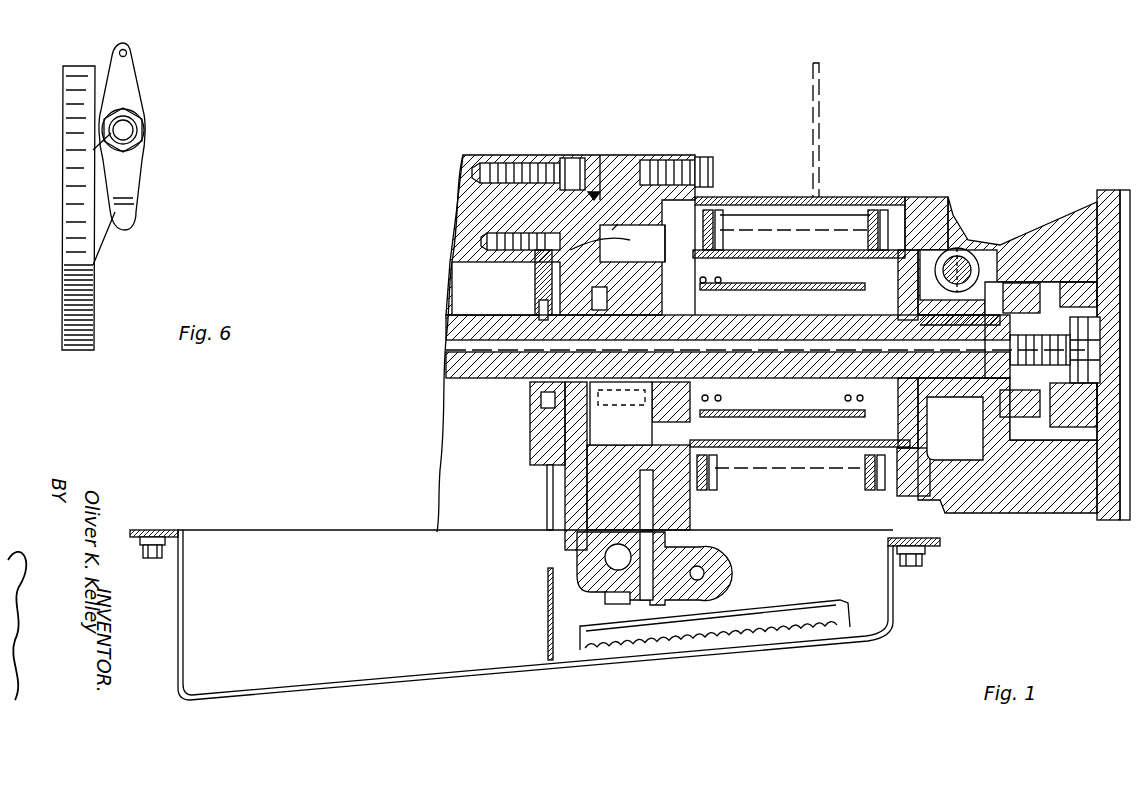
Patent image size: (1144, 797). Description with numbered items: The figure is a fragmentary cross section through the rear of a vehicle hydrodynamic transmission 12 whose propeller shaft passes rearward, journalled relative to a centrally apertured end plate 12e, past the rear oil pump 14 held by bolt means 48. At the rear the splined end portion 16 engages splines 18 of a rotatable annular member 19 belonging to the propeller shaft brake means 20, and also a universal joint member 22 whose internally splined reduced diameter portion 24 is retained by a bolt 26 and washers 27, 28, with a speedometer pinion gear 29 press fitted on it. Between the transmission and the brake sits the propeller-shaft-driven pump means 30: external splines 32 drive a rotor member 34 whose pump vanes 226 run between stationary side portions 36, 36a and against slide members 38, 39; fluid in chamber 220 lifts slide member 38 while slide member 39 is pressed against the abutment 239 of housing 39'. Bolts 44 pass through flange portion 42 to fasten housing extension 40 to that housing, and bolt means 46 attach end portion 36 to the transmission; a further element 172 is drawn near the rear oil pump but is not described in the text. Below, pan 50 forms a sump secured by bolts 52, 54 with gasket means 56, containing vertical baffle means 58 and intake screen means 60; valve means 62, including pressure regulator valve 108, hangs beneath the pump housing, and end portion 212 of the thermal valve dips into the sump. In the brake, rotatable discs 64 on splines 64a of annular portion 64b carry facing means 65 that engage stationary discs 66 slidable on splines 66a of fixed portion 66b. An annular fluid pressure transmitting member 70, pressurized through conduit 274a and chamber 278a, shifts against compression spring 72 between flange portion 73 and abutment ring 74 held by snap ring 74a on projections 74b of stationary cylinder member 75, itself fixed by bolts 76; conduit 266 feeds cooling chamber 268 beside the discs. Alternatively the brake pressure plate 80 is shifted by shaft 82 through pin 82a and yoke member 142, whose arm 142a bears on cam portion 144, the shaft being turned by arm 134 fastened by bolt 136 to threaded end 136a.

In FIG. 1, the hydrodynamic transmission 12 is at (466, 190).
In FIG. 1, the centrally apertured end plate 12e is at (575, 393).
In FIG. 1, the rear oil pump 14 is at (540, 430).
In FIG. 1, the splined end portion 16 is at (895, 322).
In FIG. 1, the splines 18 is at (888, 340).
In FIG. 1, the rotatable annular member 19 is at (900, 400).
In FIG. 1, the propeller shaft brake means 20 is at (828, 197).
In FIG. 1, the universal joint member 22 is at (1085, 288).
In FIG. 1, the reduced diameter portion 24 is at (1030, 300).
In FIG. 1, the bolt 26 is at (1100, 385).
In FIG. 1, the washer 27 is at (1088, 374).
In FIG. 1, the washer 28 is at (1085, 330).
In FIG. 1, the speedometer pinion gear 29 is at (1028, 418).
In FIG. 1, the propeller-shaft-driven pump means 30 is at (652, 170).
In FIG. 1, the external splines 32 is at (640, 310).
In FIG. 1, the rotor member 34 is at (584, 310).
In FIG. 1, the stationary end portion 36 is at (607, 239).
In FIG. 1, the stationary side portion 36a is at (638, 239).
In FIG. 1, the slide member 38 is at (621, 413).
In FIG. 1, the slide member 39 is at (602, 158).
In FIG. 1, the housing 39' is at (636, 174).
In FIG. 1, the housing extension 40 is at (905, 196).
In FIG. 1, the flange portion 42 is at (680, 160).
In FIG. 1, the bolts 44 is at (712, 160).
In FIG. 1, the bolt means 46 is at (553, 162).
In FIG. 1, the bolt means 48 is at (522, 268).
In FIG. 1, the pan or reservoir means 50 is at (455, 683).
In FIG. 1, the bolts 52 is at (152, 560).
In FIG. 1, the bolts 54 is at (925, 562).
In FIG. 1, the gasket means 56 is at (158, 530).
In FIG. 1, the vertical baffle means 58 is at (546, 626).
In FIG. 1, the intake screen means 60 is at (755, 625).
In FIG. 1, the valve means 62 is at (600, 561).
In FIG. 1, the rotatable discs 64 is at (705, 264).
In FIG. 1, the splines 64a is at (835, 262).
In FIG. 1, the annular portion 64b is at (826, 282).
In FIG. 1, the facing means 65 is at (875, 208).
In FIG. 1, the stationary discs 66 is at (712, 208).
In FIG. 1, the splines 66a is at (786, 225).
In FIG. 1, the fixed portion 66b is at (778, 208).
In FIG. 1, the annular fluid pressure transmitting member 70 is at (642, 270).
In FIG. 1, the compression spring 72 is at (722, 284).
In FIG. 1, the flange portion 73 is at (706, 408).
In FIG. 1, the abutment ring 74 is at (858, 410).
In FIG. 1, the snap ring 74a is at (878, 414).
In FIG. 1, the longitudinal projections 74b is at (777, 290).
In FIG. 1, the stationary cylinder member 75 is at (705, 284).
In FIG. 1, the bolts 76 is at (690, 302).
In FIG. 6, the brake pressure plate 80 is at (84, 330).
In FIG. 1, the brake pressure plate 80 is at (963, 435).
In FIG. 1, the shaft 82 is at (962, 250).
In FIG. 1, the pin 82a is at (965, 262).
In FIG. 1, the pressure regulator valve 108 is at (718, 568).
In FIG. 6, the arm 134 is at (126, 80).
In FIG. 6, the bolt 136 is at (138, 118).
In FIG. 6, the threaded end 136a is at (128, 135).
In FIG. 6, the yoke member 142 is at (168, 136).
In FIG. 1, the yoke member 142 is at (960, 258).
In FIG. 6, the arm 142a is at (132, 213).
In FIG. 6, the cam portion 144 is at (100, 228).
In FIG. 1, the bearing 172 is at (532, 405).
In FIG. 1, the end portion 212 is at (612, 602).
In FIG. 1, the chamber 220 is at (612, 437).
In FIG. 1, the pump vanes 226 is at (540, 283).
In FIG. 1, the abutment or stop means 239 is at (580, 208).
In FIG. 1, the conduit 266 is at (822, 78).
In FIG. 1, the brake cooling chamber 268 is at (787, 446).
In FIG. 1, the conduit 274a is at (556, 507).
In FIG. 1, the chamber 278a is at (540, 475).